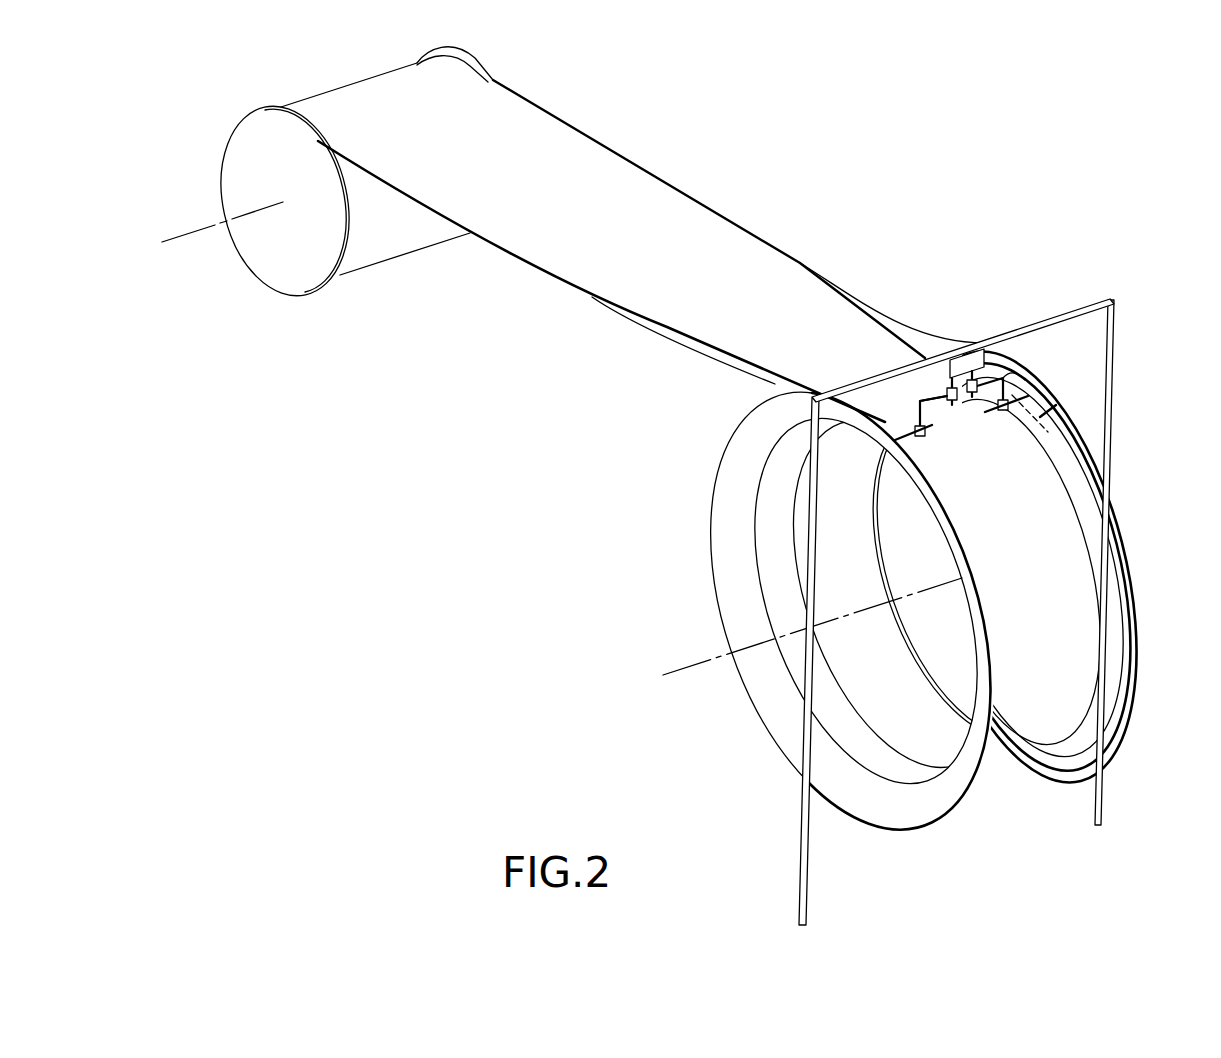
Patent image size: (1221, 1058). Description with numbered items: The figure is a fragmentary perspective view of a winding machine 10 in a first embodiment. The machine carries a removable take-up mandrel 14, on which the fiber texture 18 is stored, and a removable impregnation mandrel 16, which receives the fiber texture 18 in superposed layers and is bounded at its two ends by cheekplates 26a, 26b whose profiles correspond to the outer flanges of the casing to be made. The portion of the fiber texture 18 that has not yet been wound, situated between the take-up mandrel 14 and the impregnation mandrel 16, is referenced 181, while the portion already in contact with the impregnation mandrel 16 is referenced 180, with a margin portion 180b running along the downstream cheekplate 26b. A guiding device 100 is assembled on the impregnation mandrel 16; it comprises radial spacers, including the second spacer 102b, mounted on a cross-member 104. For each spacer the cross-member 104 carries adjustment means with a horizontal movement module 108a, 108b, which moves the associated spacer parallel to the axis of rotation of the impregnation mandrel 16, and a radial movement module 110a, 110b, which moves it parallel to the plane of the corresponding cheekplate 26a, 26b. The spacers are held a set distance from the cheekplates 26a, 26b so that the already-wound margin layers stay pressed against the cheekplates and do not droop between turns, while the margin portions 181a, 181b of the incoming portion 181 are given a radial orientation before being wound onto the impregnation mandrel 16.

The winding machine 10 is at (853, 194).
The take-up mandrel 14 is at (221, 142).
The impregnation mandrel 16 is at (711, 598).
The fiber texture 18 is at (525, 262).
The portion of the fiber texture not yet wound 181 is at (683, 224).
The margin portion 181a is at (770, 383).
The margin portion 181b is at (917, 337).
The guiding device 100 is at (964, 374).
The second spacer 102b is at (1012, 380).
The cross-member 104 is at (902, 394).
The horizontal movement module 108a is at (918, 438).
The horizontal movement module 108b is at (1060, 410).
The radial movement module 110a is at (918, 380).
The radial movement module 110b is at (1002, 370).
The already-wound portion of the fiber texture 180 is at (1013, 726).
The margin portion 180b is at (1115, 510).
The cheekplate 26a is at (880, 806).
The cheekplate 26b is at (1136, 700).